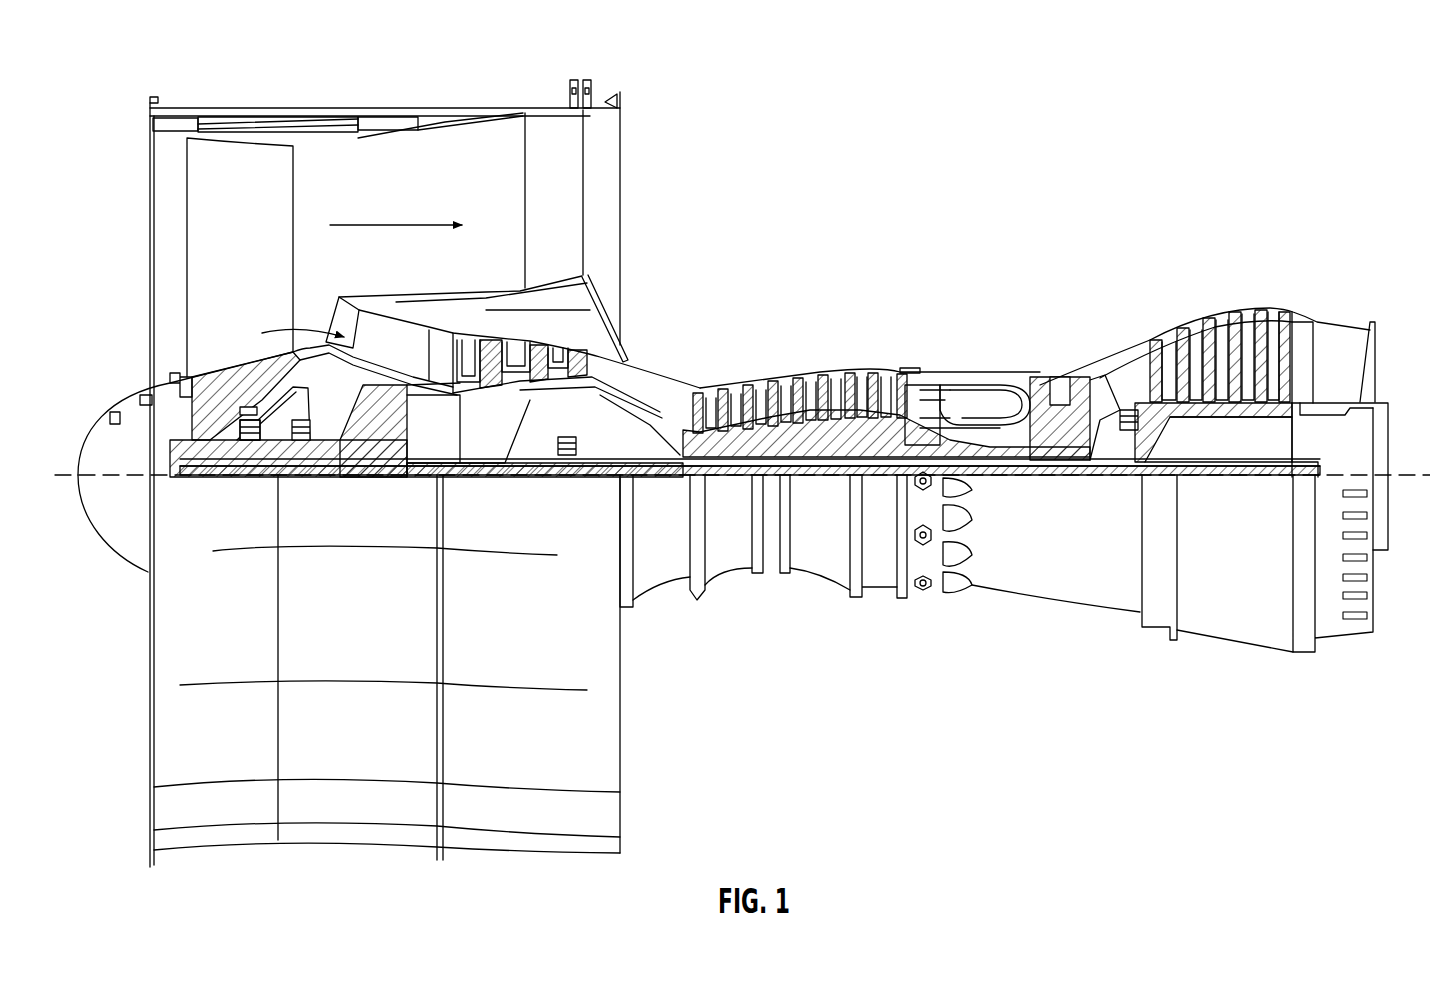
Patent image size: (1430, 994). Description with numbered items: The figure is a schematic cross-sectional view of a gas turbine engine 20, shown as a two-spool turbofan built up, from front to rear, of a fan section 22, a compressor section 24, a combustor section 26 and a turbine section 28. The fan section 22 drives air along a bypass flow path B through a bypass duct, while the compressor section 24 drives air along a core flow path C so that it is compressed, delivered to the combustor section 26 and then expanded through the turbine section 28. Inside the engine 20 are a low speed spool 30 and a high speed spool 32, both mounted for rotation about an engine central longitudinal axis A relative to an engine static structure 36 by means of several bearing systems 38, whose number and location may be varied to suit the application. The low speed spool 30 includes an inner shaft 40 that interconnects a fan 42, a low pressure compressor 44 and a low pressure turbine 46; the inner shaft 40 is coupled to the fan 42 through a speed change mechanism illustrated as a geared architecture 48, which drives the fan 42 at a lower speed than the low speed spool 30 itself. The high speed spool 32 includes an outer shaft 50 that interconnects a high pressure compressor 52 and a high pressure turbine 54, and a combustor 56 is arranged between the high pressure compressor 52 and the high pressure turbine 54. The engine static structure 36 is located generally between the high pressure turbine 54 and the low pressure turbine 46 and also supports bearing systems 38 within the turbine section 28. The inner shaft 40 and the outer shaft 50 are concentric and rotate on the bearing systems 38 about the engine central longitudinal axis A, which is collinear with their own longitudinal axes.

The gas turbine engine 20 is at (1180, 84).
The fan section 22 is at (422, 90).
The compressor section 24 is at (790, 263).
The combustor section 26 is at (980, 262).
The turbine section 28 is at (1130, 246).
The low speed spool 30 is at (838, 480).
The high speed spool 32 is at (880, 435).
The engine static structure 36 is at (878, 592).
The bearing systems 38 is at (245, 478).
The inner shaft 40 is at (645, 485).
The fan 42 is at (247, 238).
The low pressure compressor 44 is at (533, 355).
The low pressure turbine 46 is at (1228, 330).
The geared architecture 48 is at (385, 478).
The outer shaft 50 is at (990, 462).
The high pressure compressor 52 is at (800, 440).
The high pressure turbine 54 is at (1060, 372).
The combustor 56 is at (988, 395).
The engine central longitudinal axis A is at (1400, 478).
The bypass flow path B is at (400, 225).
The core flow path C is at (265, 334).